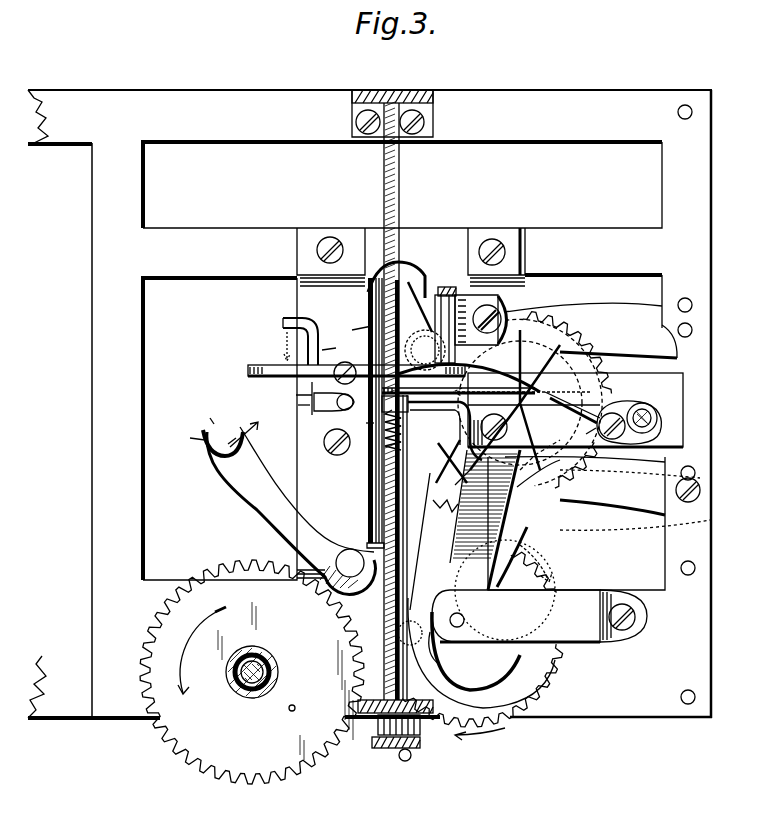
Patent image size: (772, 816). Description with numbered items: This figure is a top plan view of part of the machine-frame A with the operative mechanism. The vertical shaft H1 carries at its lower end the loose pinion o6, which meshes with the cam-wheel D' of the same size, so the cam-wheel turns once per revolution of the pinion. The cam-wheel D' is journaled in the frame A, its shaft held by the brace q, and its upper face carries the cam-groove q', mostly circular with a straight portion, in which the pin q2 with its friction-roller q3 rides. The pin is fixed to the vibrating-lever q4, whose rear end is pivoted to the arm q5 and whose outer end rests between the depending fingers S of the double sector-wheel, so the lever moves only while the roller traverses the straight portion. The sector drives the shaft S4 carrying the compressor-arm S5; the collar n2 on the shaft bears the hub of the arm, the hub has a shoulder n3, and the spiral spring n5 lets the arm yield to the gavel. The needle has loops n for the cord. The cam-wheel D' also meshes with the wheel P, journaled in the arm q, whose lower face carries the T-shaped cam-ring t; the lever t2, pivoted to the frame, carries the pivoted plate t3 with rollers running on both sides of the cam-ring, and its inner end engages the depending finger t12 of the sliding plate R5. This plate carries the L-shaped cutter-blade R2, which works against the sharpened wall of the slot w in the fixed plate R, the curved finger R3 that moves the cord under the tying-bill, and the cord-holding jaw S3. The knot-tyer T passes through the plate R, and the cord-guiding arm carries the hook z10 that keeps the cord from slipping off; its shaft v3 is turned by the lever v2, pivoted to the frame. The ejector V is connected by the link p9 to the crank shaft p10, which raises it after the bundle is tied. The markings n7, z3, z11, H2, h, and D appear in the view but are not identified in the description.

The rectangular frame A is at (370, 404).
The compressor-arm shaft S4 is at (430, 187).
The plate R is at (357, 413).
The sliding plate R5 is at (356, 325).
The finger R3 is at (330, 345).
The sliding cutter R2 is at (296, 396).
The ejector V is at (419, 357).
The slot w is at (297, 409).
The knot-tyer T is at (324, 423).
The loops n is at (388, 435).
The collar n2 is at (448, 354).
The shoulder n3 is at (445, 412).
The spiral spring n5 is at (361, 423).
The block n7 is at (395, 404).
The cam-ring t is at (451, 461).
The lever t2 is at (567, 395).
The plate t3 is at (512, 310).
The depending finger t12 is at (408, 306).
The wheel P is at (575, 426).
The link p9 is at (575, 432).
The ejector shaft p10 is at (642, 408).
The brace q is at (519, 486).
The cam-groove q' is at (362, 564).
The pin q2 is at (451, 617).
The friction-roller q3 is at (440, 648).
The vibrating-lever q4 is at (412, 757).
The arm q5 is at (508, 427).
The depending fingers S is at (392, 735).
The cord-holding jaw S3 is at (376, 730).
The compressor-arm S5 is at (583, 392).
The lever v2 is at (607, 494).
The cord-guiding-arm shaft v3 is at (342, 563).
The fork prong z3 is at (233, 426).
The hook z10 is at (190, 440).
The fork prong z11 is at (205, 414).
The vertical shaft H1 is at (232, 692).
The gear hub H2 is at (278, 668).
The loose pinion o6 is at (297, 711).
The pivot lever h is at (465, 620).
The gear D is at (480, 620).
The cam-wheel D' is at (496, 575).